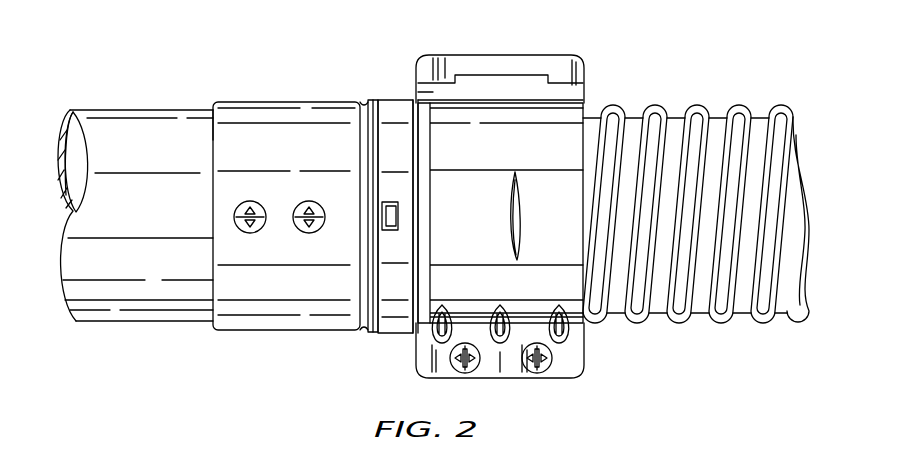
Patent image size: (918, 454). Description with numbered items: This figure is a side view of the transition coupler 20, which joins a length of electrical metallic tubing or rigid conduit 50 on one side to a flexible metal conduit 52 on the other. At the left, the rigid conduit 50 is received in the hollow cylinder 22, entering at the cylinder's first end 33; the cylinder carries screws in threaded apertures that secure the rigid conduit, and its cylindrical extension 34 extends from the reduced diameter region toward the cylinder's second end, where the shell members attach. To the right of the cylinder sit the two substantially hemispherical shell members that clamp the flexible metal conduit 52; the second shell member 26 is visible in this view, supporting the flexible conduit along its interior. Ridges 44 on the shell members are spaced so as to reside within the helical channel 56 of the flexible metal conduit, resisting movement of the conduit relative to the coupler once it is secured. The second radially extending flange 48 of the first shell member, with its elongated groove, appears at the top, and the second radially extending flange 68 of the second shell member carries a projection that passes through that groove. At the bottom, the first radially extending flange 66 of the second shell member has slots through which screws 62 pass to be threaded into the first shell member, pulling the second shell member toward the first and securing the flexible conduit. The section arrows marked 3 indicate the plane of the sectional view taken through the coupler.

The section line 3- 3 is at (46, 178).
The transition coupler 20 is at (348, 80).
The hollow cylinder 22 is at (262, 313).
The second shell member 26 is at (553, 128).
The first end 33 is at (213, 140).
The cylindrical extension 34 is at (395, 313).
The ridges 44 is at (519, 220).
The second radially extending flange 48 is at (562, 63).
The rigid conduit 50 is at (100, 104).
The flexible metal conduit 52 is at (696, 217).
The helical channel 56 is at (738, 313).
The screws 62 is at (540, 364).
The first radially extending flange 66 is at (573, 357).
The second radially extending flange 68 is at (433, 92).